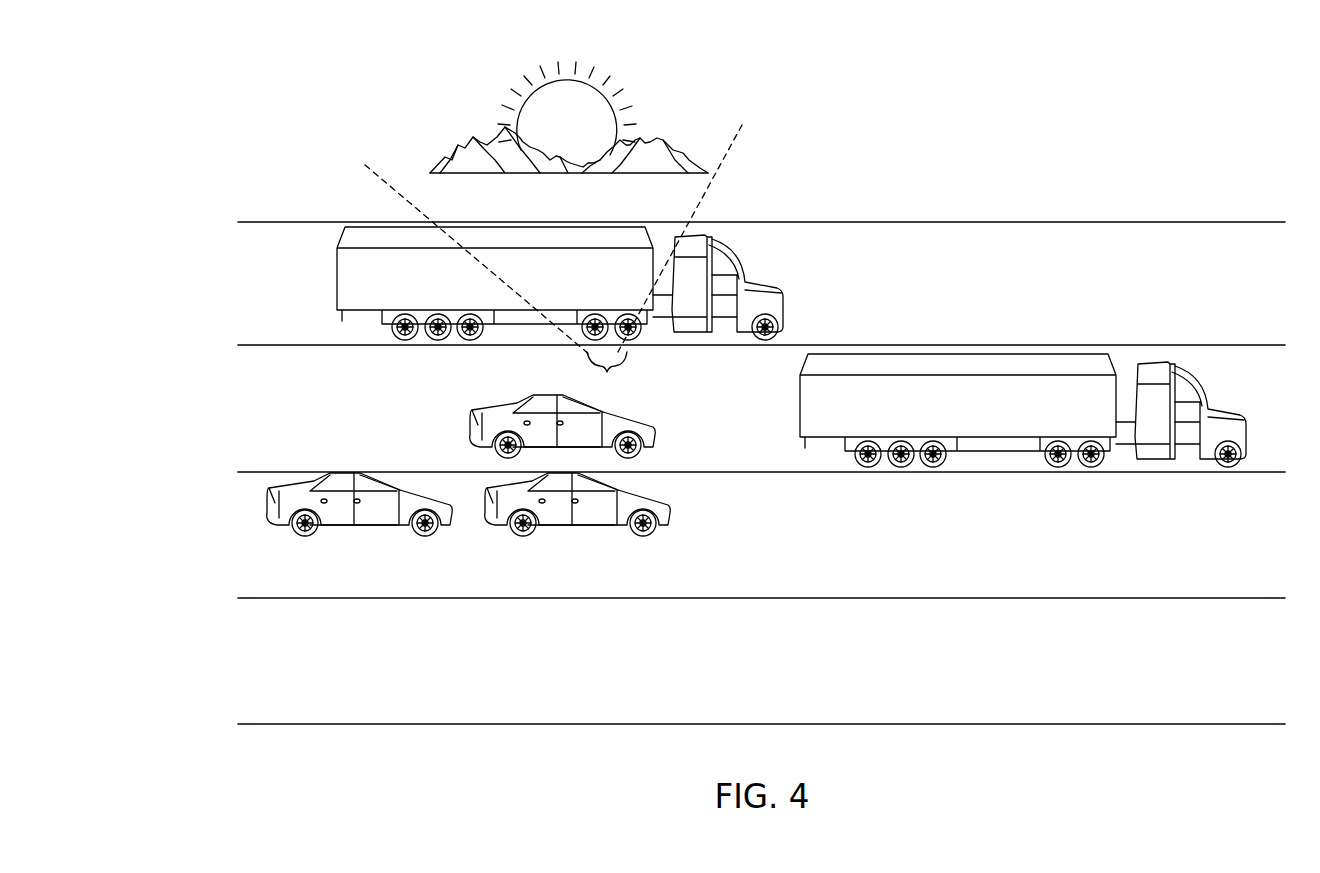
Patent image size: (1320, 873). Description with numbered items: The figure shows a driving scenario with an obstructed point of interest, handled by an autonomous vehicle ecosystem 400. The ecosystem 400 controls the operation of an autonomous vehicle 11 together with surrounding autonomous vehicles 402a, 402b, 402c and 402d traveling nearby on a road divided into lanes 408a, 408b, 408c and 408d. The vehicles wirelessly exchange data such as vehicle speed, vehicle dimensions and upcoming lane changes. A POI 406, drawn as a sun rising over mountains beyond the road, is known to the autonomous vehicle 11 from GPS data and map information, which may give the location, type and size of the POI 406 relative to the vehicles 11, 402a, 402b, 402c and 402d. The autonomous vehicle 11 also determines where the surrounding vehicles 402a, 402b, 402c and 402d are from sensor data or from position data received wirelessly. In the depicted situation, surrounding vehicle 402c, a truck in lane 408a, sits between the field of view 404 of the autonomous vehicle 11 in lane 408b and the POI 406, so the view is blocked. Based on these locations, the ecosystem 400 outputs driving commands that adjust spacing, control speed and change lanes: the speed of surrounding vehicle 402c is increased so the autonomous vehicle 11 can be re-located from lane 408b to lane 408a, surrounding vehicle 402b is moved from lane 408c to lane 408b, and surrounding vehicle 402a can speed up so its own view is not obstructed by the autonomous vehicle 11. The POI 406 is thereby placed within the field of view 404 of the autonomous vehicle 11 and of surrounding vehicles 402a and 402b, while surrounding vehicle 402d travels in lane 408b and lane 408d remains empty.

The autonomous vehicle ecosystem 400 is at (937, 185).
The autonomous vehicle 11 is at (492, 421).
The surrounding autonomous vehicle 402a is at (271, 504).
The surrounding autonomous vehicle 402b is at (496, 513).
The surrounding autonomous vehicle 402c is at (771, 288).
The surrounding autonomous vehicle 402d is at (1233, 413).
The field of view 404 is at (553, 268).
The POI 406 is at (594, 95).
The lane 408a is at (256, 332).
The lane 408b is at (256, 462).
The lane 408c is at (256, 583).
The lane 408d is at (256, 712).